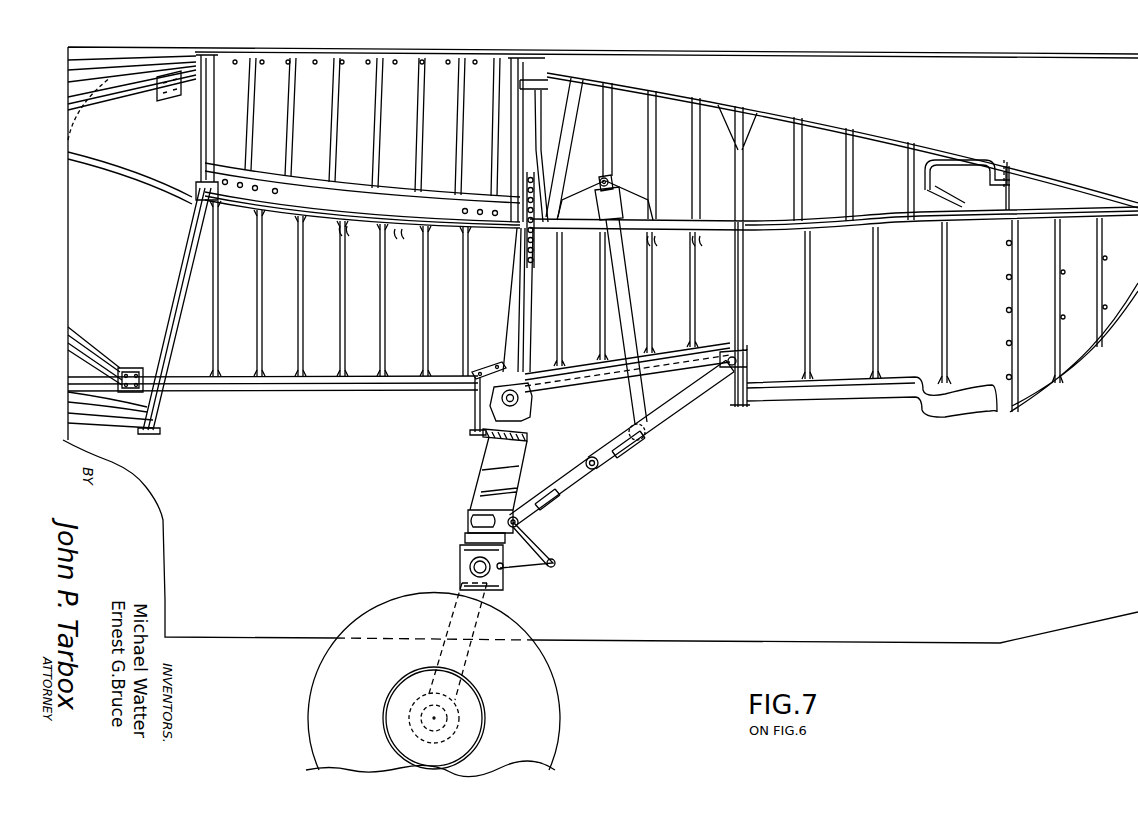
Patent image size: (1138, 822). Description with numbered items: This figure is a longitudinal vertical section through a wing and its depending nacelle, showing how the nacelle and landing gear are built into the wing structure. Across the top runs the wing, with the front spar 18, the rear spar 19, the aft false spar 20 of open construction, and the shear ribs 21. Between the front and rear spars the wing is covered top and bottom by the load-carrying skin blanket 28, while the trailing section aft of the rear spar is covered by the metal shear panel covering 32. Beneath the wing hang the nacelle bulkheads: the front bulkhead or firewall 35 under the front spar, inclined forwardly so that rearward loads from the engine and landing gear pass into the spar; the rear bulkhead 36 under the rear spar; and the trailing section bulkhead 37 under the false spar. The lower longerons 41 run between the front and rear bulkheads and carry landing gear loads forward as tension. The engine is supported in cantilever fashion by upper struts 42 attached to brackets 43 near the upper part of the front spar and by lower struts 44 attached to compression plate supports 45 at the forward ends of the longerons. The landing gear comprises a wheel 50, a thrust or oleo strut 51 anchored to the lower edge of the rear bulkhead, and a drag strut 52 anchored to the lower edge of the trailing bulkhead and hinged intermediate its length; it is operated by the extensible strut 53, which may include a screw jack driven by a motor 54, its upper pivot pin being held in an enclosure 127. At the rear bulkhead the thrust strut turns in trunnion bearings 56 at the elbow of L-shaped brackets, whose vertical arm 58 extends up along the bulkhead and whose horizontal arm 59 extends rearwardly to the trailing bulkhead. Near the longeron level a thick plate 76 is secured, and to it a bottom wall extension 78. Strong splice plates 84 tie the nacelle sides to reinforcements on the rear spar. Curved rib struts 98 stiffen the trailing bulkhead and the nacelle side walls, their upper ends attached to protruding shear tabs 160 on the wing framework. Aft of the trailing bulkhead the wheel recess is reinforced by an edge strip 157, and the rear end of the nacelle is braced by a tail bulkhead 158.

The front spar 18 is at (209, 127).
The rear spar 19 is at (511, 147).
The aft false spar 20 is at (744, 173).
The shear ribs 21 is at (880, 182).
The skin blanket 28 is at (452, 55).
The shear panel covering 32 is at (832, 130).
The front bulkhead 35 is at (168, 292).
The rear bulkhead 36 is at (508, 303).
The trailing section bulkhead 37 is at (749, 311).
The lower longerons 41 is at (327, 386).
The upper struts 42 is at (145, 110).
The brackets 43 is at (198, 82).
The lower struts 44 is at (92, 350).
The compression plate supports 45 is at (150, 365).
The wheel 50 is at (508, 628).
The thrust strut 51 is at (480, 484).
The drag strut 52 is at (580, 475).
The extensible strut 53 is at (662, 416).
The motor 54 is at (620, 202).
The trunnion bearings 56 is at (518, 411).
The vertical arm 58 is at (517, 338).
The horizontal arm 59 is at (593, 388).
The thick plate 76 is at (491, 367).
The bottom wall extension 78 is at (476, 413).
The splice plates 84 is at (522, 233).
The rib struts 98 is at (422, 347).
The enclosure 127 is at (608, 184).
The edge strip 157 is at (848, 389).
The tail bulkhead 158 is at (1012, 330).
The shear tabs 160 is at (398, 236).